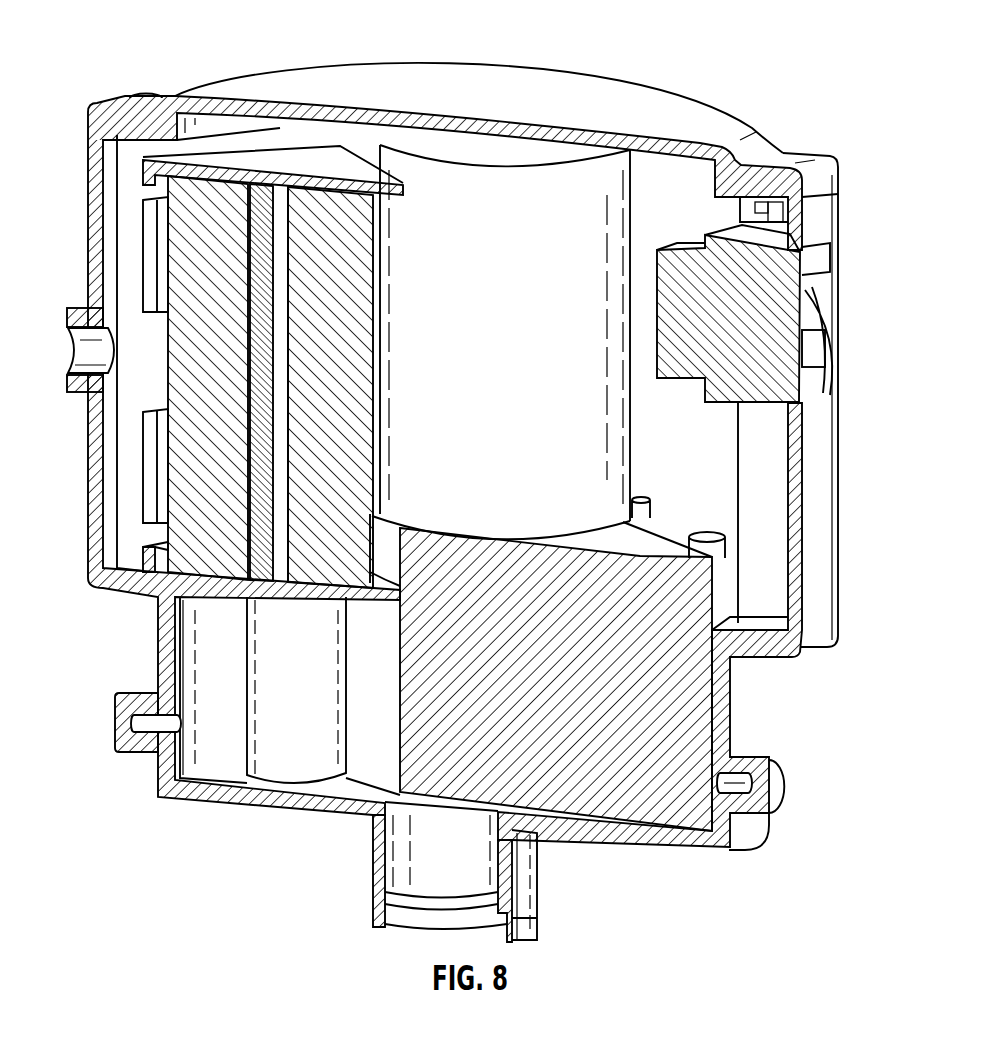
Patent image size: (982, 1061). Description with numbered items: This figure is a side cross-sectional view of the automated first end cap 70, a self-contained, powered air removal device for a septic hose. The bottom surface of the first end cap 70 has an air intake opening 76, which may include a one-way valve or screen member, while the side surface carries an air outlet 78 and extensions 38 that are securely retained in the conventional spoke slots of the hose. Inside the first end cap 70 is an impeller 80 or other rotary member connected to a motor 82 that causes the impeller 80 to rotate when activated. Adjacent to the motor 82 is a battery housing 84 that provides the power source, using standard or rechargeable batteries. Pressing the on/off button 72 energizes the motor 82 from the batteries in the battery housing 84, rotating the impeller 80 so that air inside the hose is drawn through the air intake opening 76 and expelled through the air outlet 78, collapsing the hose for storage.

The first end cap 70 is at (134, 23).
The battery housing 84 is at (212, 210).
The motor 82 is at (493, 187).
The impeller 80 is at (617, 763).
The on/off button 72 is at (806, 333).
The air outlet 78 is at (88, 352).
The extensions 38 is at (117, 720).
The air intake opening 76 is at (427, 852).